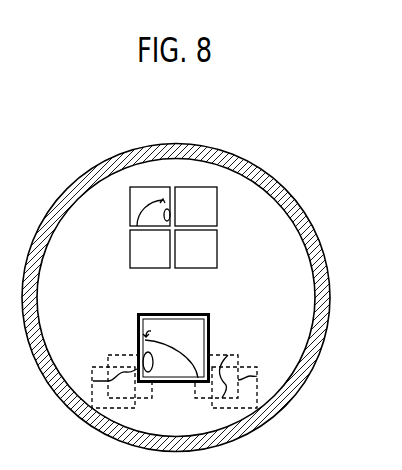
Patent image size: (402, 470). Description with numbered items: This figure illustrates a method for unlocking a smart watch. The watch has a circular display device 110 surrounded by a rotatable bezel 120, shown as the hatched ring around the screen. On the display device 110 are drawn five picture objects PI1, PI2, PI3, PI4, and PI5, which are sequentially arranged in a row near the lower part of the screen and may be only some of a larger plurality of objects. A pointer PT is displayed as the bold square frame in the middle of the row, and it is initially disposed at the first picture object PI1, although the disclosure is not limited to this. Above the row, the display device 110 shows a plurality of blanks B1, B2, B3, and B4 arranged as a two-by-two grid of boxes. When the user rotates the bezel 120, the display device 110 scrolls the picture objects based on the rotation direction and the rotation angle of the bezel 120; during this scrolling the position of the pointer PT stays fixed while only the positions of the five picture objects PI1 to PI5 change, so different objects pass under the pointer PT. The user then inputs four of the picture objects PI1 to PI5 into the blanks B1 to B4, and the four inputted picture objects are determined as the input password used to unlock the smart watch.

The display device 110 is at (297, 212).
The bezel 120 is at (278, 187).
The blank B1 is at (130, 205).
The blank B2 is at (217, 207).
The blank B3 is at (130, 245).
The blank B4 is at (217, 247).
The pointer PT is at (202, 315).
The first picture object PI1 is at (178, 313).
The second picture object PI2 is at (228, 355).
The third picture object PI3 is at (253, 367).
The fourth picture object PI4 is at (123, 355).
The fifth picture object PI5 is at (92, 366).